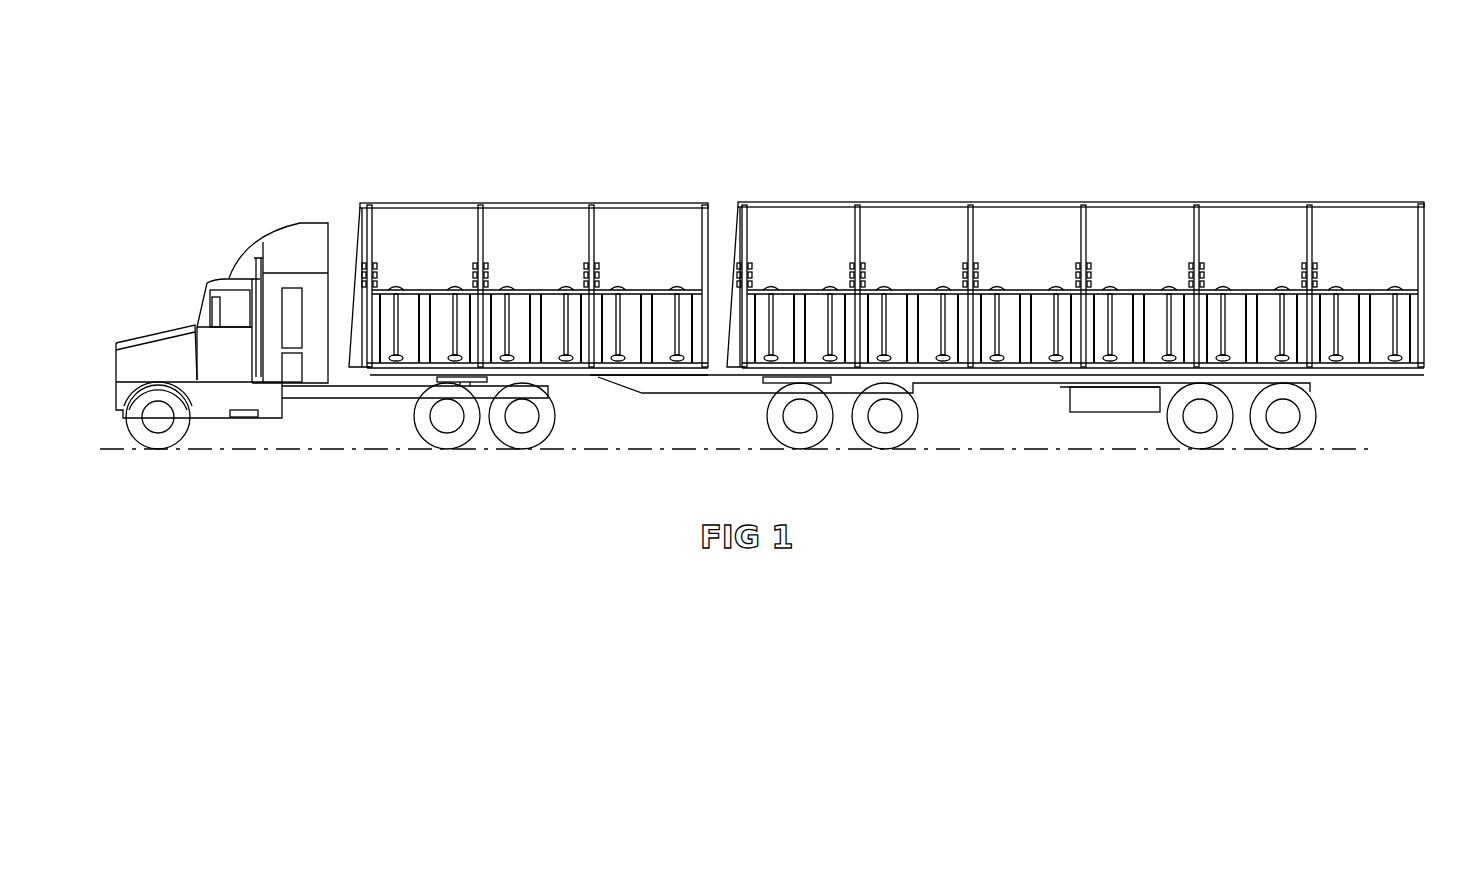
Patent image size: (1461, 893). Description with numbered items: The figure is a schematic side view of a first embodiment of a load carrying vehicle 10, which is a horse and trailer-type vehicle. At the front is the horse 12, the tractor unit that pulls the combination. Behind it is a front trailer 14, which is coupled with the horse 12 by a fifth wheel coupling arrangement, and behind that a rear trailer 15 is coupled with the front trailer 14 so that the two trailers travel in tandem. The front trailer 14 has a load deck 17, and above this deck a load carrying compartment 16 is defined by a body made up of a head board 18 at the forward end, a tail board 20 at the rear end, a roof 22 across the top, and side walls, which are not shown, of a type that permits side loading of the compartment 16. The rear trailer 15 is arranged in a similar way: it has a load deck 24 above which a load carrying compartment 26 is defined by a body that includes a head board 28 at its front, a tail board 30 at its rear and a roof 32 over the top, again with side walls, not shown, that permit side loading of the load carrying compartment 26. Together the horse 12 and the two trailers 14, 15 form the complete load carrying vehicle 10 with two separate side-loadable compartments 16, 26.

The load carrying vehicle 10 is at (1062, 137).
The horse 12 is at (203, 312).
The front trailer 14 is at (550, 203).
The rear trailer 15 is at (1223, 202).
The load carrying compartment 16 is at (641, 232).
The load deck 17 is at (563, 372).
The head board 18 is at (362, 230).
The tail board 20 is at (708, 222).
The roof 22 is at (527, 205).
The load deck 24 is at (1142, 375).
The load carrying compartment 26 is at (1333, 230).
The head board 28 is at (747, 230).
The tail board 30 is at (1425, 231).
The roof 32 is at (910, 203).